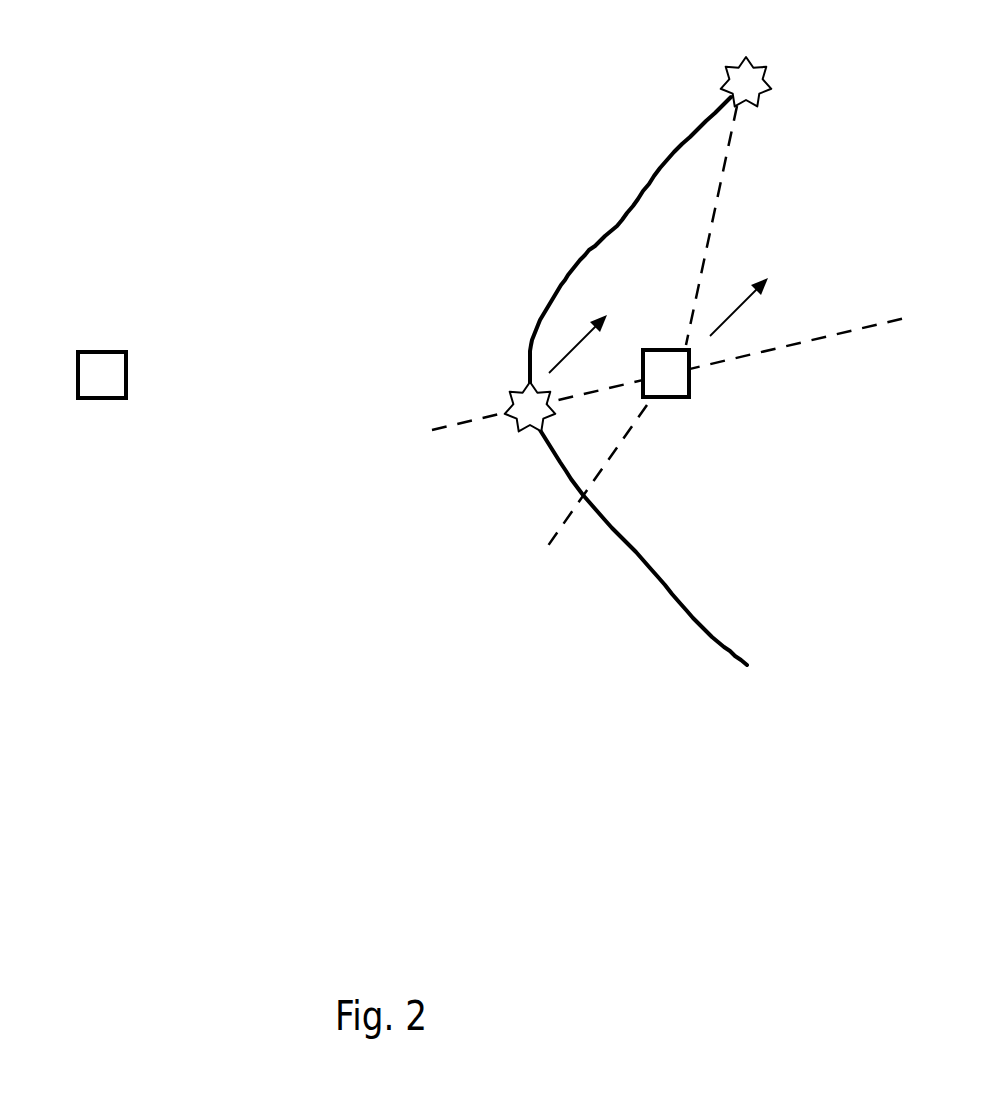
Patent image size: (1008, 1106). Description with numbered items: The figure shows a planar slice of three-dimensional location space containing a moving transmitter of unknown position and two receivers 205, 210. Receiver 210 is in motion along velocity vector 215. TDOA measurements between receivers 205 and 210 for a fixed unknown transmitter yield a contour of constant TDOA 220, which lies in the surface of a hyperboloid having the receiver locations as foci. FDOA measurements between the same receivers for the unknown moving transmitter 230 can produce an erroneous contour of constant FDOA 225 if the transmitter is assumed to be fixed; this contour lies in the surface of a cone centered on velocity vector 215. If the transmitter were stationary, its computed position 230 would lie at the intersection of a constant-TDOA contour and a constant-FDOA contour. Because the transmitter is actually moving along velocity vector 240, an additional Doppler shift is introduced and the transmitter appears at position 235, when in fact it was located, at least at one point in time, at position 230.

The receiver 205 is at (94, 340).
The receiver 210 is at (679, 417).
The velocity vector 215 is at (730, 330).
The contour of constant TDOA 220 is at (557, 237).
The contour of constant FDOA 225 is at (747, 167).
The moving transmitter 230 is at (498, 382).
The apparent transmitter position 235 is at (703, 62).
The velocity vector 240 is at (558, 333).